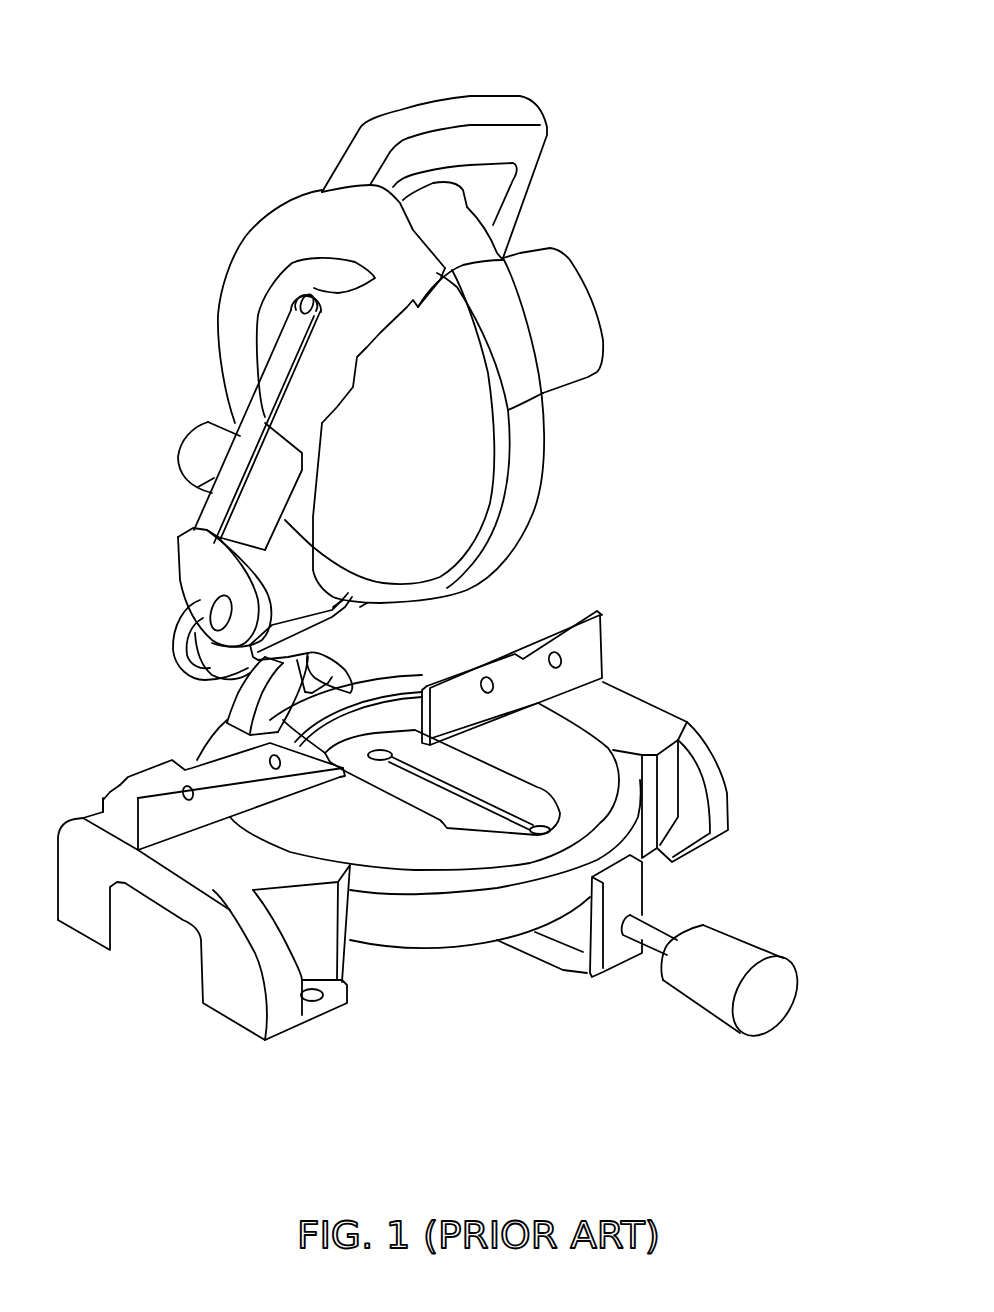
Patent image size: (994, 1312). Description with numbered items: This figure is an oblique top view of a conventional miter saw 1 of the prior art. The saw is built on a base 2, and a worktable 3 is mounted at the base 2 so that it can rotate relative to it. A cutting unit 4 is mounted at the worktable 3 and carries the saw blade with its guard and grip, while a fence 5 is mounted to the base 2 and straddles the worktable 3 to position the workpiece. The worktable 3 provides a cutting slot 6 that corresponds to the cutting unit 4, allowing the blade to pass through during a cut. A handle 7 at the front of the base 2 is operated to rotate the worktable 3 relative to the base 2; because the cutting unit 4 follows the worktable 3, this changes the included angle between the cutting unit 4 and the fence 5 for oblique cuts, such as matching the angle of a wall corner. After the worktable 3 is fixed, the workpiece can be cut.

The miter saw 1 is at (637, 100).
The base 2 is at (218, 865).
The worktable 3 is at (578, 757).
The cutting unit 4 is at (318, 430).
The fence 5 is at (590, 648).
The cutting slot 6 is at (483, 805).
The handle 7 is at (727, 958).